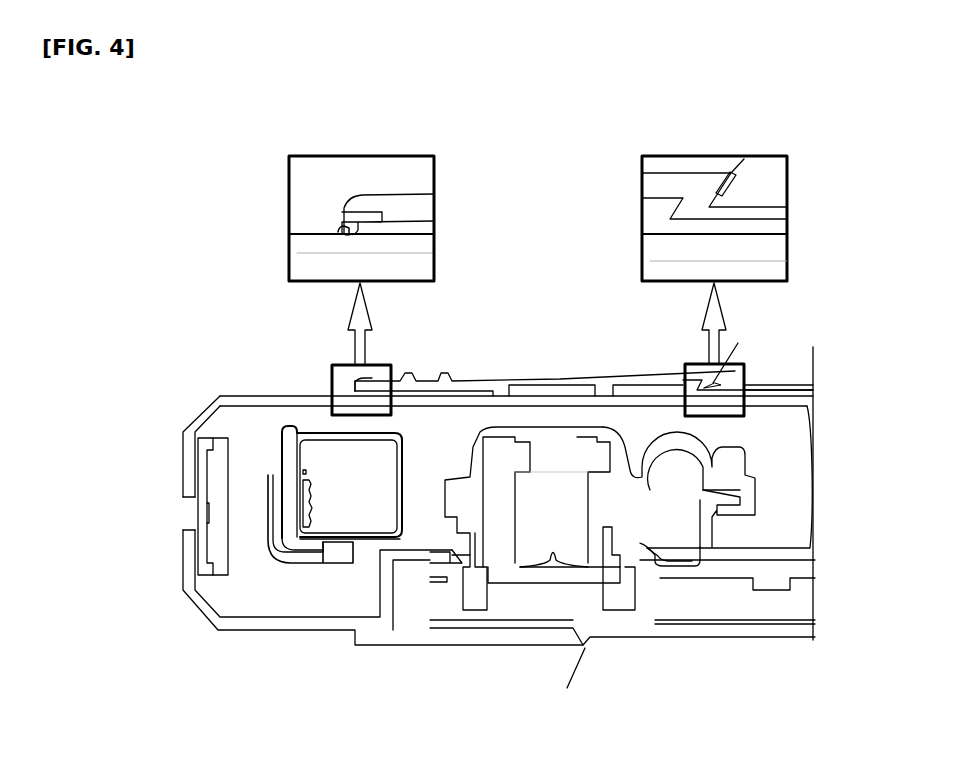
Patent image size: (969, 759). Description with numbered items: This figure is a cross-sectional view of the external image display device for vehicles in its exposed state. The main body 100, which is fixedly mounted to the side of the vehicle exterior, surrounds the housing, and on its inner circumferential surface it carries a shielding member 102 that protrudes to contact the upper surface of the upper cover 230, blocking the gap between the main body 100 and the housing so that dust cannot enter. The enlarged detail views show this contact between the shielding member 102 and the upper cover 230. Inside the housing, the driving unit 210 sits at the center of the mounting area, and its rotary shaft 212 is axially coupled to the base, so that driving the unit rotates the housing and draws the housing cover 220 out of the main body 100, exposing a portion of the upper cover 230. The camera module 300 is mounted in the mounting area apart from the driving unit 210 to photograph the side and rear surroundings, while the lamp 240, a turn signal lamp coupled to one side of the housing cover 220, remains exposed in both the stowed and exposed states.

The main body 100 is at (548, 378).
The shielding member 102 is at (338, 228).
The driving unit 210 is at (613, 509).
The rotary shaft 212 is at (535, 532).
The housing cover 220 is at (223, 595).
The upper cover 230 is at (258, 403).
The lamp 240 is at (195, 512).
The camera module 300 is at (323, 522).